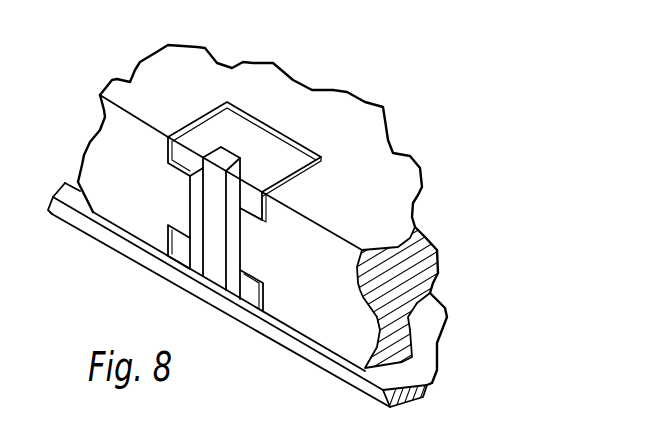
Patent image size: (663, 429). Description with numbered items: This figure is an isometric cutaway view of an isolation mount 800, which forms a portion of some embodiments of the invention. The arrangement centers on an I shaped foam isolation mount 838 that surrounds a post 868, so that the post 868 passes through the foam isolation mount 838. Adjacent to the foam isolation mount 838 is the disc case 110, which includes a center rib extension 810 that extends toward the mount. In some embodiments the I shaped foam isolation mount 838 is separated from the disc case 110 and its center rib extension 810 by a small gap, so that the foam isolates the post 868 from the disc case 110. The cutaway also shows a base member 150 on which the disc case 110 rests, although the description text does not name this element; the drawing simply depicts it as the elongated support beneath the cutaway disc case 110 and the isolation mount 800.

The isolation mount 800 is at (410, 107).
The disc case 110 is at (377, 148).
The mounting rail 150 is at (292, 356).
The center rib extension 810 is at (248, 246).
The I shaped foam isolation mount 838 is at (280, 138).
The post 868 is at (212, 213).